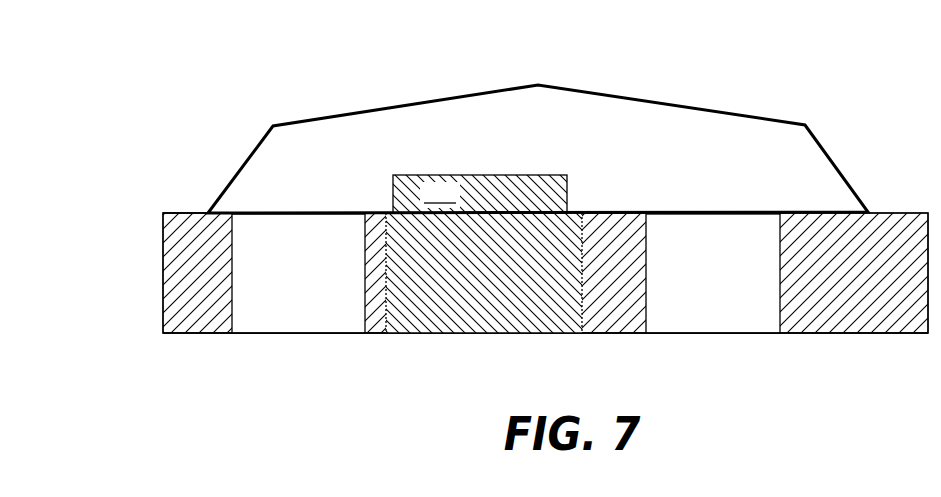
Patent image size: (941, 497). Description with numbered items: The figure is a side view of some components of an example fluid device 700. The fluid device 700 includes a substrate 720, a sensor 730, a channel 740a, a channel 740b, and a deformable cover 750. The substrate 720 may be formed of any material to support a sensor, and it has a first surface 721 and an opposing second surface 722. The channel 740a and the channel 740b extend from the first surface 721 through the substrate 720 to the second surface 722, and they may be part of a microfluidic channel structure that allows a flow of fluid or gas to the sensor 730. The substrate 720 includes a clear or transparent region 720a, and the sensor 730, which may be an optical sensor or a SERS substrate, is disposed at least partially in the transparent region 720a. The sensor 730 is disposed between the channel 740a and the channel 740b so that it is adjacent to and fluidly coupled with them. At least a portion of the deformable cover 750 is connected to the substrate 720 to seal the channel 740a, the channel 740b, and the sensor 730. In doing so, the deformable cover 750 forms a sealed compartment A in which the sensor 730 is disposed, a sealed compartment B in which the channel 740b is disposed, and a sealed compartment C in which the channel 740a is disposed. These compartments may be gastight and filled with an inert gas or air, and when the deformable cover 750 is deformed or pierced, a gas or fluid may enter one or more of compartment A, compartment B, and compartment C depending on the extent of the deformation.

The fluid device 700 is at (524, 211).
The substrate 720 is at (524, 282).
The transparent region 720a is at (484, 273).
The first surface 721 is at (165, 192).
The second surface 722 is at (524, 363).
The sensor 730 is at (480, 194).
The channel 740a is at (298, 273).
The channel 740b is at (713, 273).
The deformable cover 750 is at (538, 137).
The sealed compartment A is at (648, 89).
The sealed compartment B is at (779, 202).
The sealed compartment C is at (244, 208).